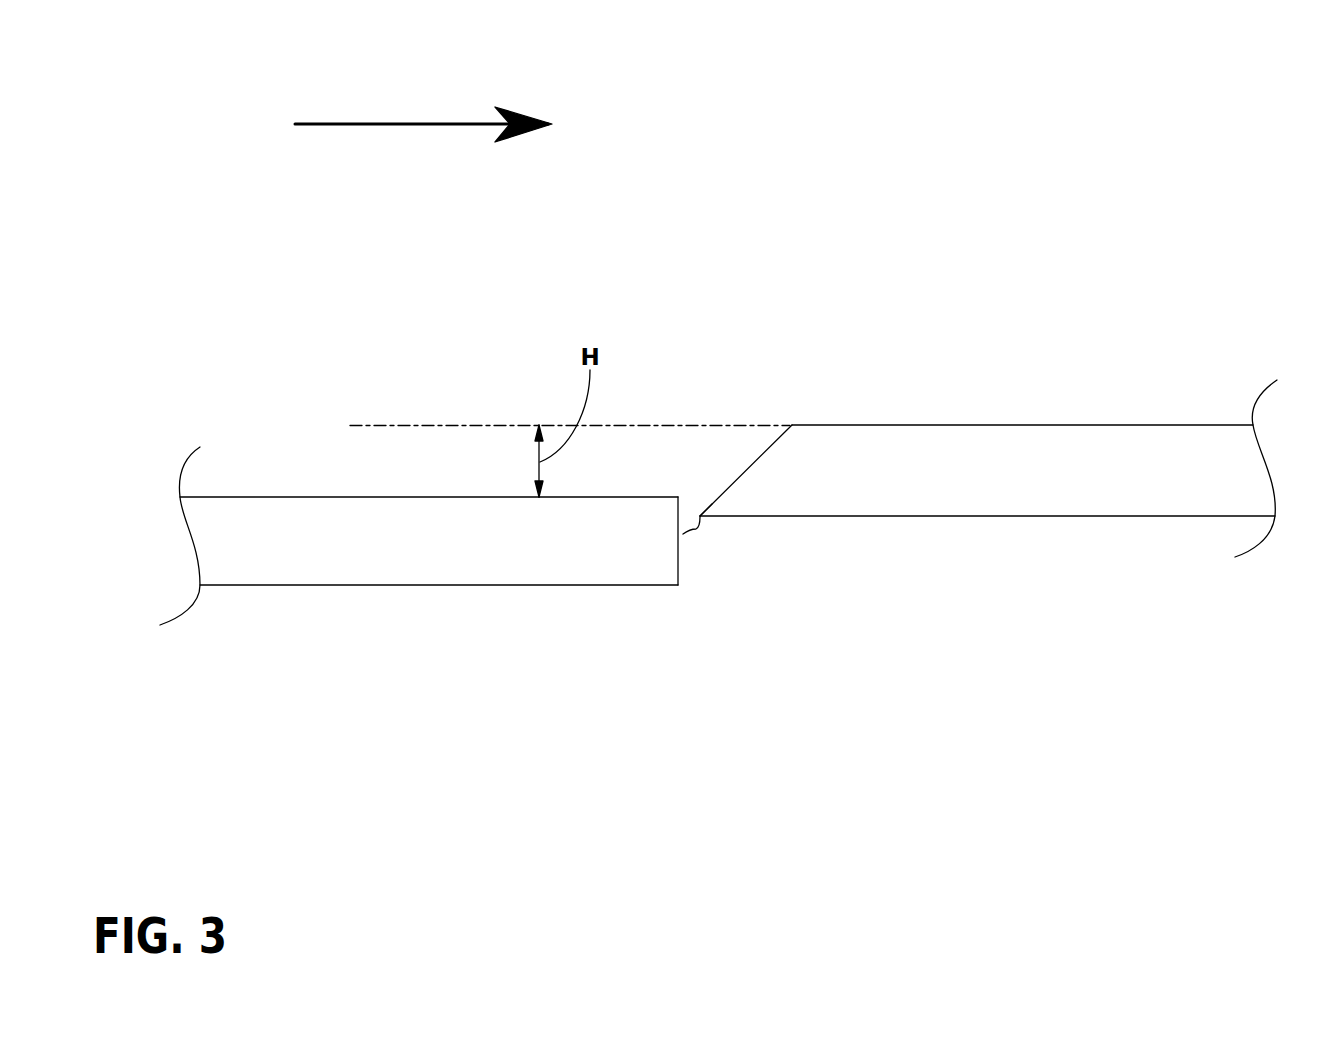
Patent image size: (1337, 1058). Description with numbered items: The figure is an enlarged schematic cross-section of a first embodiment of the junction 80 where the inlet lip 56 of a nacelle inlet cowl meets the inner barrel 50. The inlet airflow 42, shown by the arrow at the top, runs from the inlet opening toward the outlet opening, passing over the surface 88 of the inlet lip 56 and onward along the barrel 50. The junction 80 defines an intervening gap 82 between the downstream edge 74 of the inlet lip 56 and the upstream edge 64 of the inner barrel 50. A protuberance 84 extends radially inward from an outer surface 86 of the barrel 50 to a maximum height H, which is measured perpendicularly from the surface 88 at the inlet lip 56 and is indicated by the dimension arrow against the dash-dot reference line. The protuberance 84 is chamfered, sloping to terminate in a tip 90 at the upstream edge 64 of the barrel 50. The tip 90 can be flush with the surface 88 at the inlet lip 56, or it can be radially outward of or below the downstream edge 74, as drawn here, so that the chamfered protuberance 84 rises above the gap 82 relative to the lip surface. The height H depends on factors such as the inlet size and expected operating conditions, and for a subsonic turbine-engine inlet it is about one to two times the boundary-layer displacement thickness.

The inlet airflow 42 is at (423, 122).
The inner barrel 50 is at (962, 416).
The inlet lip 56 is at (448, 515).
The upstream edge 64 is at (744, 472).
The downstream edge 74 is at (691, 507).
The junction 80 is at (696, 564).
The intervening gap 82 is at (697, 532).
The protuberance 84 is at (793, 463).
The outer surface 86 is at (840, 516).
The surface 88 is at (335, 497).
The tip 90 is at (712, 500).